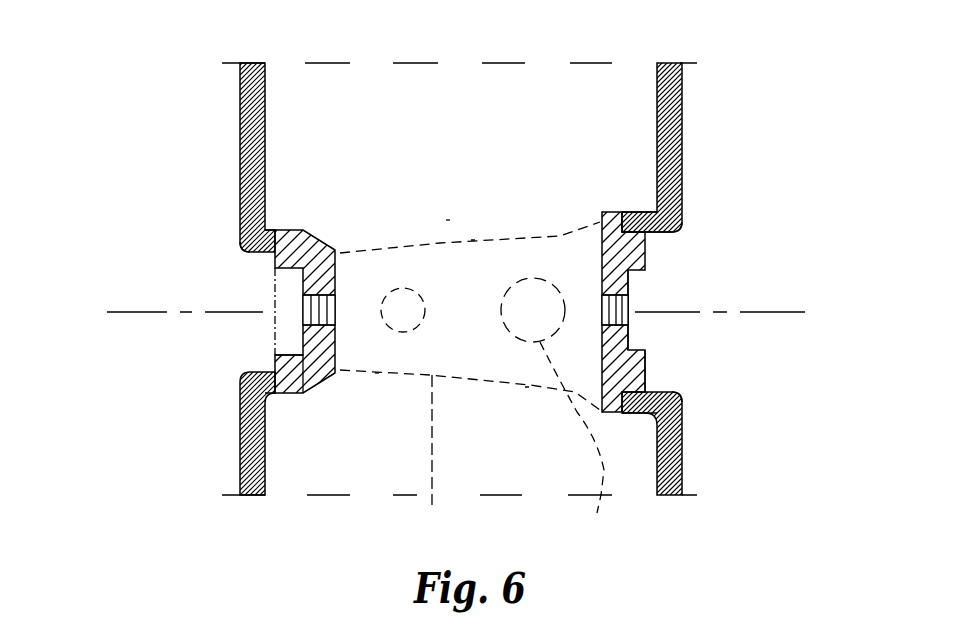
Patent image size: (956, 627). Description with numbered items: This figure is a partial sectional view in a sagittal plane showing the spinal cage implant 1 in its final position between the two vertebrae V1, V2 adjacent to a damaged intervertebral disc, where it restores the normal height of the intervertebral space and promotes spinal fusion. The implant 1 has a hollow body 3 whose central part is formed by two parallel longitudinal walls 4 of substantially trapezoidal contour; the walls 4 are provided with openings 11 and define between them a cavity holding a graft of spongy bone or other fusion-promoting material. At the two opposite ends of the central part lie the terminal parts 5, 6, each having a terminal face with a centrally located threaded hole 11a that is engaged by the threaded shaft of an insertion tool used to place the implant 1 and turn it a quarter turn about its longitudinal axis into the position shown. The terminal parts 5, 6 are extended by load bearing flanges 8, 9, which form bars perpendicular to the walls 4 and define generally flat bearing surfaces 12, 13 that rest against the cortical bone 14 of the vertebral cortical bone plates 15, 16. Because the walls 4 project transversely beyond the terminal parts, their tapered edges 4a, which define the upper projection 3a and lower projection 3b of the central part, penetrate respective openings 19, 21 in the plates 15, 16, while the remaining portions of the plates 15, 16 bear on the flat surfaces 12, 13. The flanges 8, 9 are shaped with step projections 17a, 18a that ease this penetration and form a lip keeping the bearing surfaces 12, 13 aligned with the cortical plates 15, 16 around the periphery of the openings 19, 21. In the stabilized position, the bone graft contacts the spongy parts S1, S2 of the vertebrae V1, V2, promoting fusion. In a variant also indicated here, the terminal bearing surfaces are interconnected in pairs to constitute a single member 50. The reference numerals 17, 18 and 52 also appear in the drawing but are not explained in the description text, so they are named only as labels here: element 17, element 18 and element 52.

The spinal cage implant 1 is at (742, 274).
The hollow body 3 is at (508, 410).
The upper projection 3a is at (388, 250).
The lower projection 3b is at (412, 375).
The longitudinal walls 4 is at (431, 455).
The tapered edges 4a is at (473, 240).
The terminal part 5 is at (162, 323).
The terminal part 6 is at (647, 299).
The load bearing flanges 8 is at (275, 255).
The load bearing flanges 9 is at (659, 258).
The openings 11 is at (572, 441).
The threaded hole 11a is at (303, 311).
The bearing surface 12 is at (288, 397).
The bearing surface 13 is at (667, 231).
The cortical bone 14 is at (288, 228).
The vertebral cortical bone plate 15 is at (294, 228).
The vertebral cortical bone plate 16 is at (298, 393).
The seat ring shoulder 17 is at (273, 361).
The step projection 17a is at (240, 253).
The seat ring edge 18 is at (647, 358).
The step projection 18a is at (677, 217).
The opening 19 is at (448, 220).
The opening 21 is at (377, 373).
The single member 50 is at (273, 317).
The pipe axis 52 is at (790, 312).
The spongy part S1 is at (408, 113).
The spongy part S2 is at (460, 437).
The vertebra V1 is at (680, 130).
The vertebra V2 is at (680, 466).